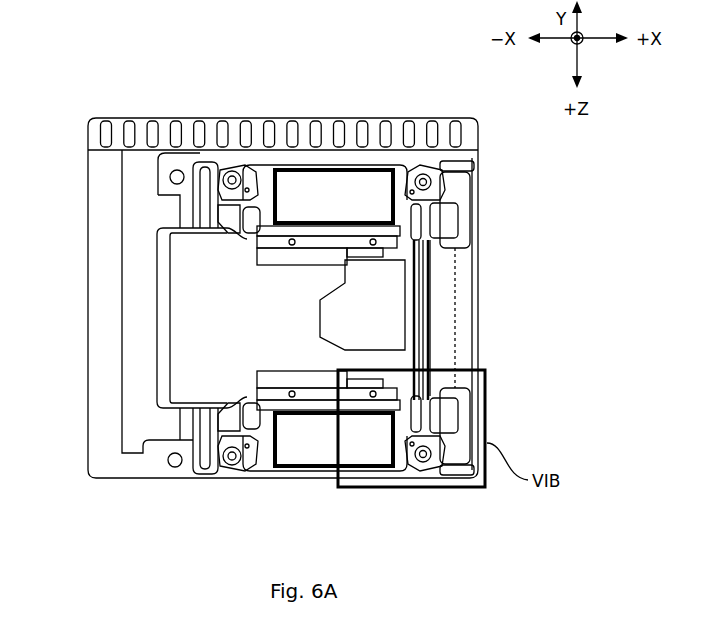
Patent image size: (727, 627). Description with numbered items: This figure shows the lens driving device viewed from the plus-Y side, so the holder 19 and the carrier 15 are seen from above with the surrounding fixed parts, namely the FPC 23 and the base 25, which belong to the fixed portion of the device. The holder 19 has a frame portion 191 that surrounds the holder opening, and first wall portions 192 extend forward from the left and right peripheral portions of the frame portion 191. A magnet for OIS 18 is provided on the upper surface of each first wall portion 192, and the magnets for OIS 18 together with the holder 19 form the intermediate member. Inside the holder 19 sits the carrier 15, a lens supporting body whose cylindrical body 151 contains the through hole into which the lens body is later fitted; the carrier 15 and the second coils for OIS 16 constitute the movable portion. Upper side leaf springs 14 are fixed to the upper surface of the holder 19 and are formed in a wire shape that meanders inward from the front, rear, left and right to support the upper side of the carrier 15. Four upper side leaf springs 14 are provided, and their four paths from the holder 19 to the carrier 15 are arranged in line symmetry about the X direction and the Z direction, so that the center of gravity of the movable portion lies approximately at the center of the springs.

The upper side leaf spring 14 is at (407, 187).
The carrier 15 is at (452, 320).
The cylindrical body 151 is at (393, 330).
The second coil for OIS 16 is at (348, 227).
The magnet for OIS 18 is at (318, 185).
The holder 19 is at (387, 297).
The frame portion 191 is at (442, 282).
The first wall portion 192 is at (257, 177).
The FPC 23 is at (138, 428).
The base 25 is at (107, 480).